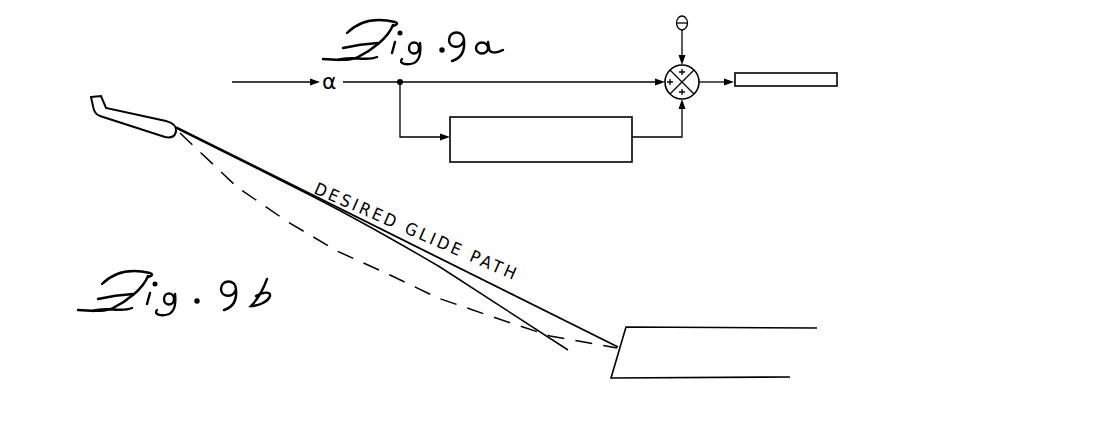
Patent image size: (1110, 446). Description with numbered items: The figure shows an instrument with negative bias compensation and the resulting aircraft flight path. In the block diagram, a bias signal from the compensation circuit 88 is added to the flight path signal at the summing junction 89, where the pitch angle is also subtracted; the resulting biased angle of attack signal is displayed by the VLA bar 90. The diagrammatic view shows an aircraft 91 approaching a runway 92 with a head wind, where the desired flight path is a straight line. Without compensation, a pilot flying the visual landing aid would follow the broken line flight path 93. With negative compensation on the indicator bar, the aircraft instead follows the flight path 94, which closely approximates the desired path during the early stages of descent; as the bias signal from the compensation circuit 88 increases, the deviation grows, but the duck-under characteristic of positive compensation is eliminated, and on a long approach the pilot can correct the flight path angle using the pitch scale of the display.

In FIG. 9A, the compensation circuit 88 is at (605, 162).
In FIG. 9A, the summing junction 89 is at (693, 78).
In FIG. 9A, the VLA bar 90 is at (838, 74).
In FIG. 9B, the aircraft 91 is at (150, 125).
In FIG. 9B, the runway 92 is at (678, 340).
In FIG. 9B, the broken line flight path 93 is at (512, 325).
In FIG. 9B, the flight path 94 is at (511, 314).